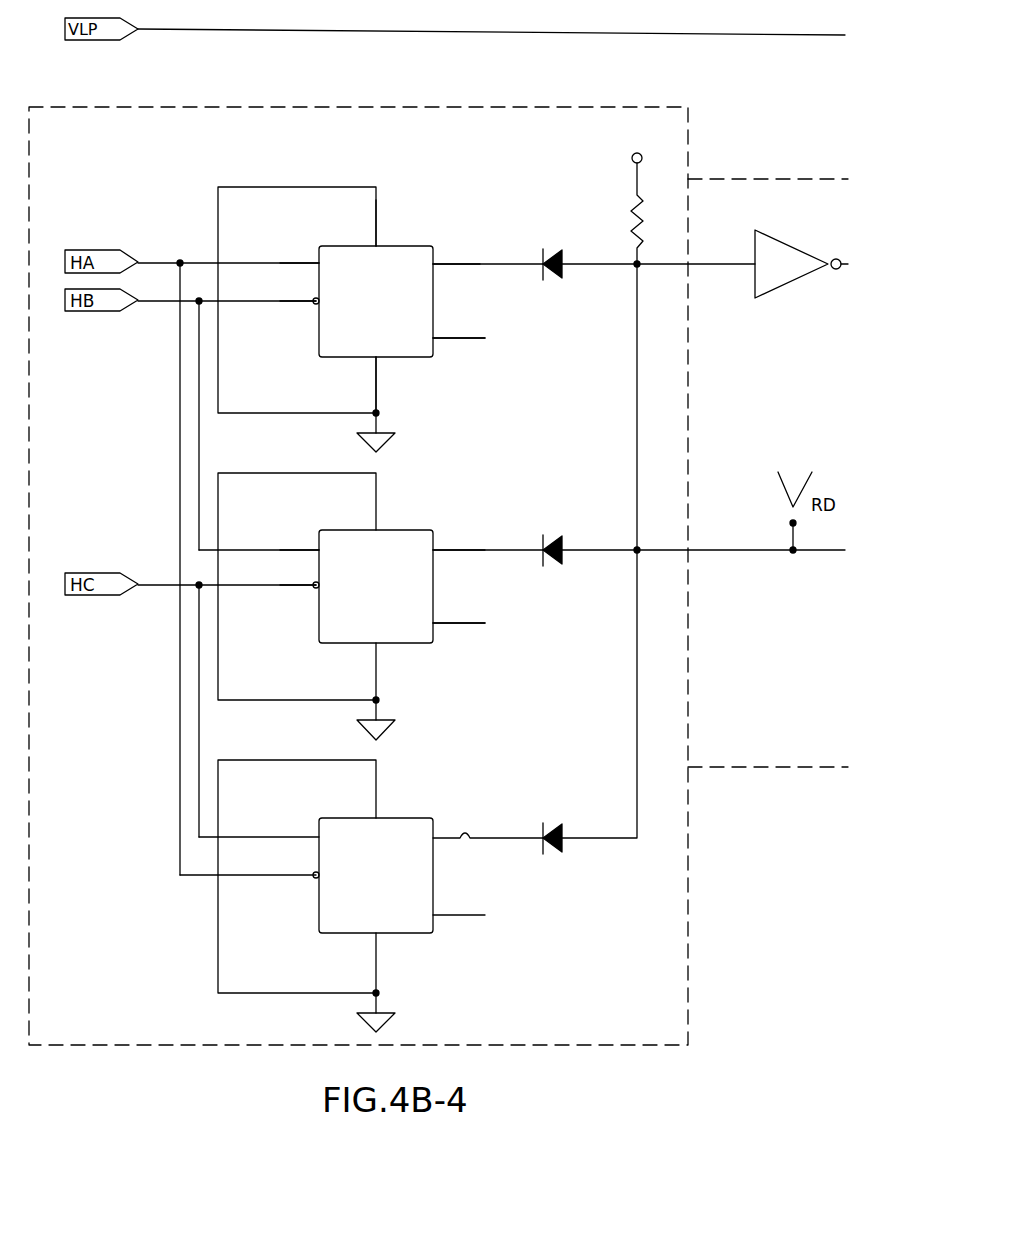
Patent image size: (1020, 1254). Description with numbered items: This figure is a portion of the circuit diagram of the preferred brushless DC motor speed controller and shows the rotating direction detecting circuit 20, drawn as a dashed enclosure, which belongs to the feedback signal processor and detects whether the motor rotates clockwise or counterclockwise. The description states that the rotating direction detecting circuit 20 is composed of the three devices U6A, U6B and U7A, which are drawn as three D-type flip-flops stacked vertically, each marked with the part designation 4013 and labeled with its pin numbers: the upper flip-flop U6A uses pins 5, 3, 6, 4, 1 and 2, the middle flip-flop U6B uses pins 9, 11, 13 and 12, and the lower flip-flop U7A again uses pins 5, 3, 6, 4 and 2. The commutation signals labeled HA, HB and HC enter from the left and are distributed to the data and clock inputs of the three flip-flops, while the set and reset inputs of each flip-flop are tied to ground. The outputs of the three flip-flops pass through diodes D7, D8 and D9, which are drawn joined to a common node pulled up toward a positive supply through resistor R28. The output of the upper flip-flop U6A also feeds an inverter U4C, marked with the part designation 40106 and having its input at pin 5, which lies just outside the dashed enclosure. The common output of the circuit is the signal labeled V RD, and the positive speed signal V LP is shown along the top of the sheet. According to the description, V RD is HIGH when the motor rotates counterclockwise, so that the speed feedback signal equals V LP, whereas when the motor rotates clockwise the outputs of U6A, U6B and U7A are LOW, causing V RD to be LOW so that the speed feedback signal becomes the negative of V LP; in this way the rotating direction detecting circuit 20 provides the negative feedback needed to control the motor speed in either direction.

The rotating direction detecting circuit 20 is at (693, 986).
The flip-flop U6A is at (380, 319).
The flip-flop U6B is at (380, 606).
The flip-flop U7A is at (380, 896).
The Schmitt inverter 40106 U4C is at (801, 268).
The diode D7 is at (645, 253).
The diode D8 is at (690, 539).
The diode D9 is at (586, 559).
The pull-up resistor R28 is at (657, 196).
The dual D flip-flop part number 4013 is at (470, 364).
The hex Schmitt inverter part number 40106 is at (795, 317).
The flip-flop pin 1 is at (430, 455).
The flip-flop pin 2 is at (459, 614).
The flip-flop pin 3 is at (298, 576).
The flip-flop pin 4 is at (384, 670).
The pin 5 is at (512, 538).
The flip-flop pin 6 is at (384, 503).
The flip-flop pin 9 is at (299, 538).
The flip-flop pin 11 is at (298, 574).
The flip-flop pin 12 is at (459, 611).
The flip-flop pin 13 is at (459, 538).